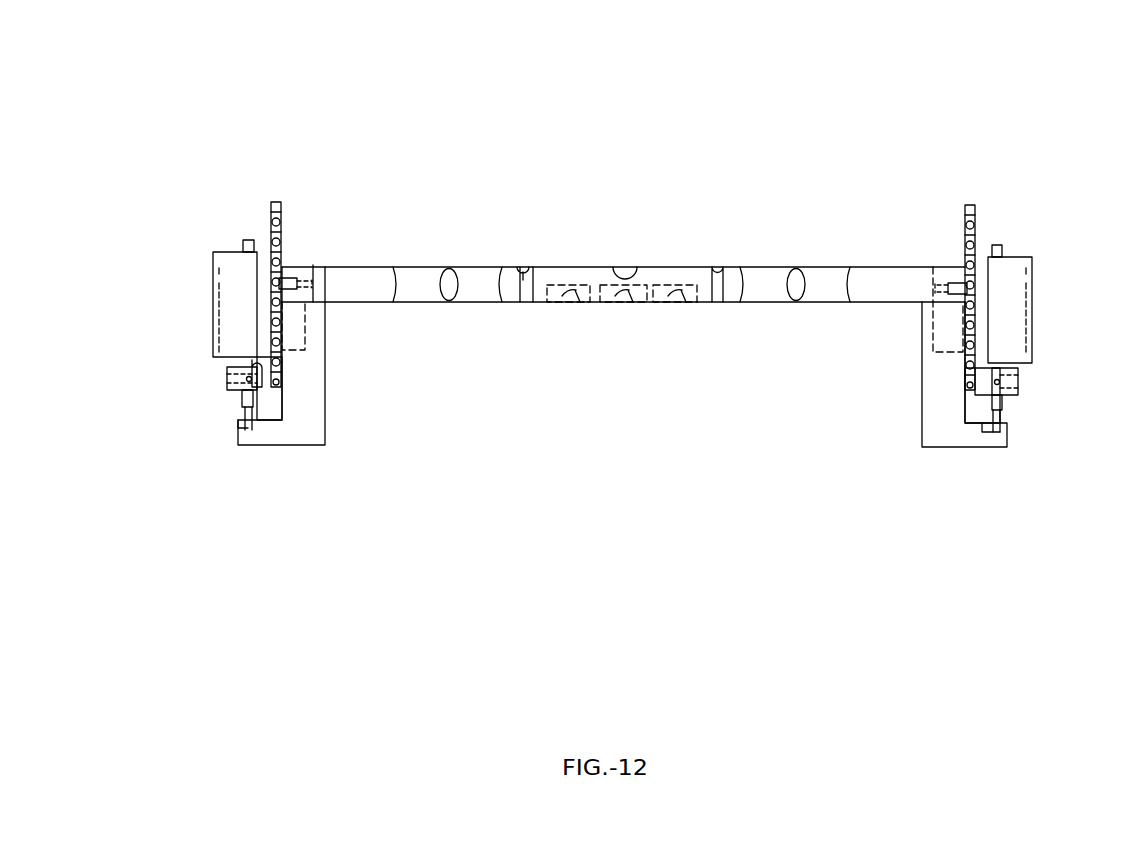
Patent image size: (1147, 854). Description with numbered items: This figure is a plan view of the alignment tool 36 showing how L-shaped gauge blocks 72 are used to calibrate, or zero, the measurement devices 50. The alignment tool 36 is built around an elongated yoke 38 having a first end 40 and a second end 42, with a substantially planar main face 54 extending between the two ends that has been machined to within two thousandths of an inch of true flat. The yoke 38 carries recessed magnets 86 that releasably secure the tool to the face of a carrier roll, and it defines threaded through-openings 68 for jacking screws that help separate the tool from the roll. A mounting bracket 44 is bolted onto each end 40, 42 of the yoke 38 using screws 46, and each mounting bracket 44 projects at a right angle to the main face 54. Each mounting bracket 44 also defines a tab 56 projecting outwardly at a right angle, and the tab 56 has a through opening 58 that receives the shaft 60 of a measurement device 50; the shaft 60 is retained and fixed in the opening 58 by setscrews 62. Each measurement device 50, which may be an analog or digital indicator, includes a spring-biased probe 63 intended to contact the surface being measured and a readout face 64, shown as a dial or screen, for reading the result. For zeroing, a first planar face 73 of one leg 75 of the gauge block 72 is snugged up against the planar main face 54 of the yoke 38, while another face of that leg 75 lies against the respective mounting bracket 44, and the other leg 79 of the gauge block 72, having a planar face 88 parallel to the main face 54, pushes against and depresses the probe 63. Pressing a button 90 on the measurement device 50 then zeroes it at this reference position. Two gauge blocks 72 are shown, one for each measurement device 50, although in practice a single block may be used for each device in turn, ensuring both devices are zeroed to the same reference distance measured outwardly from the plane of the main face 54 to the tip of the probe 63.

The alignment tool 36 is at (680, 145).
The yoke 38 is at (572, 268).
The first end 40 is at (297, 302).
The second end 42 is at (943, 268).
The mounting bracket 44 is at (277, 202).
The screw 46 is at (293, 287).
The measurement device 50 is at (215, 240).
The main face 54 is at (487, 303).
The tab 56 is at (227, 383).
The through opening 58 is at (253, 362).
The shaft 60 is at (242, 393).
The setscrew 62 is at (999, 381).
The probe 63 is at (248, 430).
The readout face 64 is at (213, 305).
The threaded through-opening 68 is at (508, 268).
The gauge block 72 is at (333, 453).
The first planar face 73 is at (320, 302).
The leg 75 is at (308, 392).
The other leg 79 is at (300, 445).
The magnet 86 is at (578, 302).
The planar face 88 is at (268, 418).
The button 90 is at (250, 240).